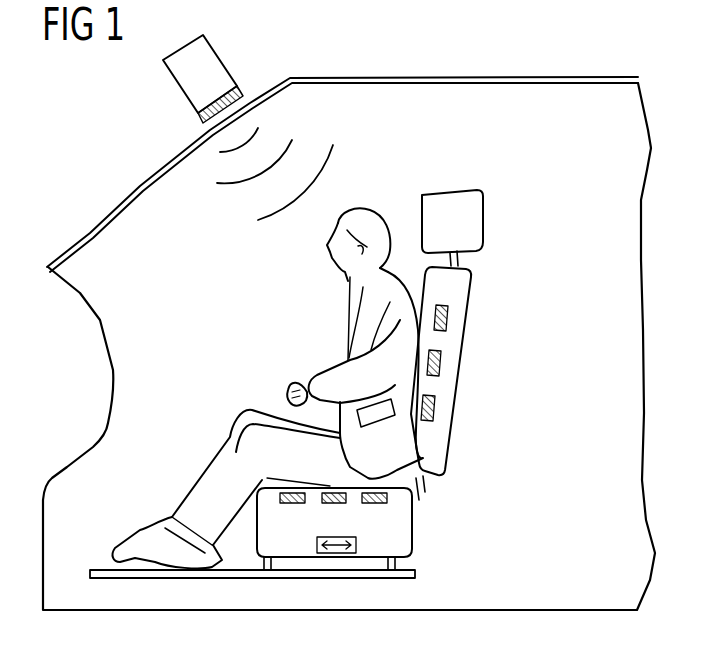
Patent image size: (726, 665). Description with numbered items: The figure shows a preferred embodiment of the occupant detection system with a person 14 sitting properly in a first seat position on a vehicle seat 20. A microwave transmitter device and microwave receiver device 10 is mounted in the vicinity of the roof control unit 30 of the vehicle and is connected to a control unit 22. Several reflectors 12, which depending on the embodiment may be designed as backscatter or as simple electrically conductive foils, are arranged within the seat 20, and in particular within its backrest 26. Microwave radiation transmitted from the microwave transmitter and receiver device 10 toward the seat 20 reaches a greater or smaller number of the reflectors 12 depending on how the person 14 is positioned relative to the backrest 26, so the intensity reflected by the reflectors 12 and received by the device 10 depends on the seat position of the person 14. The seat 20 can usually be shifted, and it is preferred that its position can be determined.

The microwave transmitter device and microwave receiver device 10 is at (242, 93).
The reflectors 12 is at (446, 317).
The person 14 is at (350, 313).
The vehicle seat 20 is at (535, 467).
The control unit 22 is at (213, 62).
The backrest 26 is at (465, 283).
The roof control unit 30 is at (367, 77).